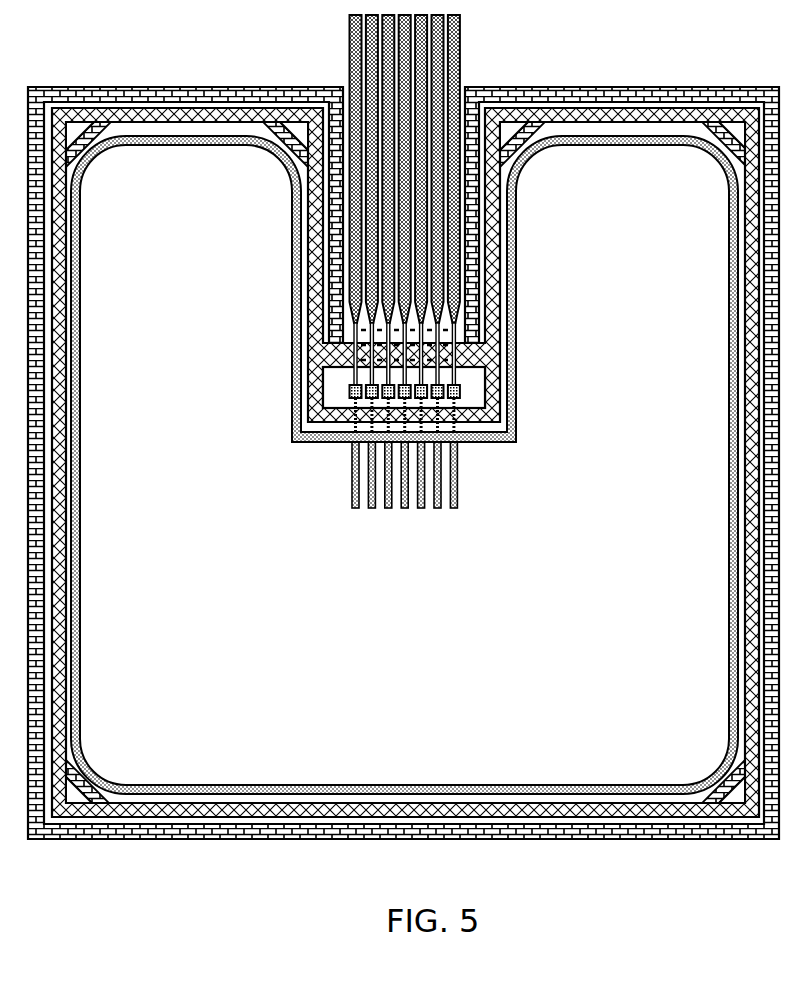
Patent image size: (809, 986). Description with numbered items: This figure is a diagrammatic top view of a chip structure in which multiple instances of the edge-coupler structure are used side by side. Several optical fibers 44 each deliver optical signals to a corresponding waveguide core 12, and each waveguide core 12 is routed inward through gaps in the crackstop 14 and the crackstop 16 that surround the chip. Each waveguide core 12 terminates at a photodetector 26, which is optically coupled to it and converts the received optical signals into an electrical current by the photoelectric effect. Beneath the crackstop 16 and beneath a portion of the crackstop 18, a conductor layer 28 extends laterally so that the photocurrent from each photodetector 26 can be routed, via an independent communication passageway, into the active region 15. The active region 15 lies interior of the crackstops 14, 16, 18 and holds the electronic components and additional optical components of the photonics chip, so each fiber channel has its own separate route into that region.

The crackstop 14 is at (338, 205).
The crackstop 16 is at (332, 360).
The active region 15 is at (415, 641).
The crackstop 18 is at (358, 412).
The optical fiber 44 is at (455, 289).
The waveguide core 12 is at (453, 361).
The photodetector 26 is at (453, 389).
The conductor layer 28 is at (422, 467).